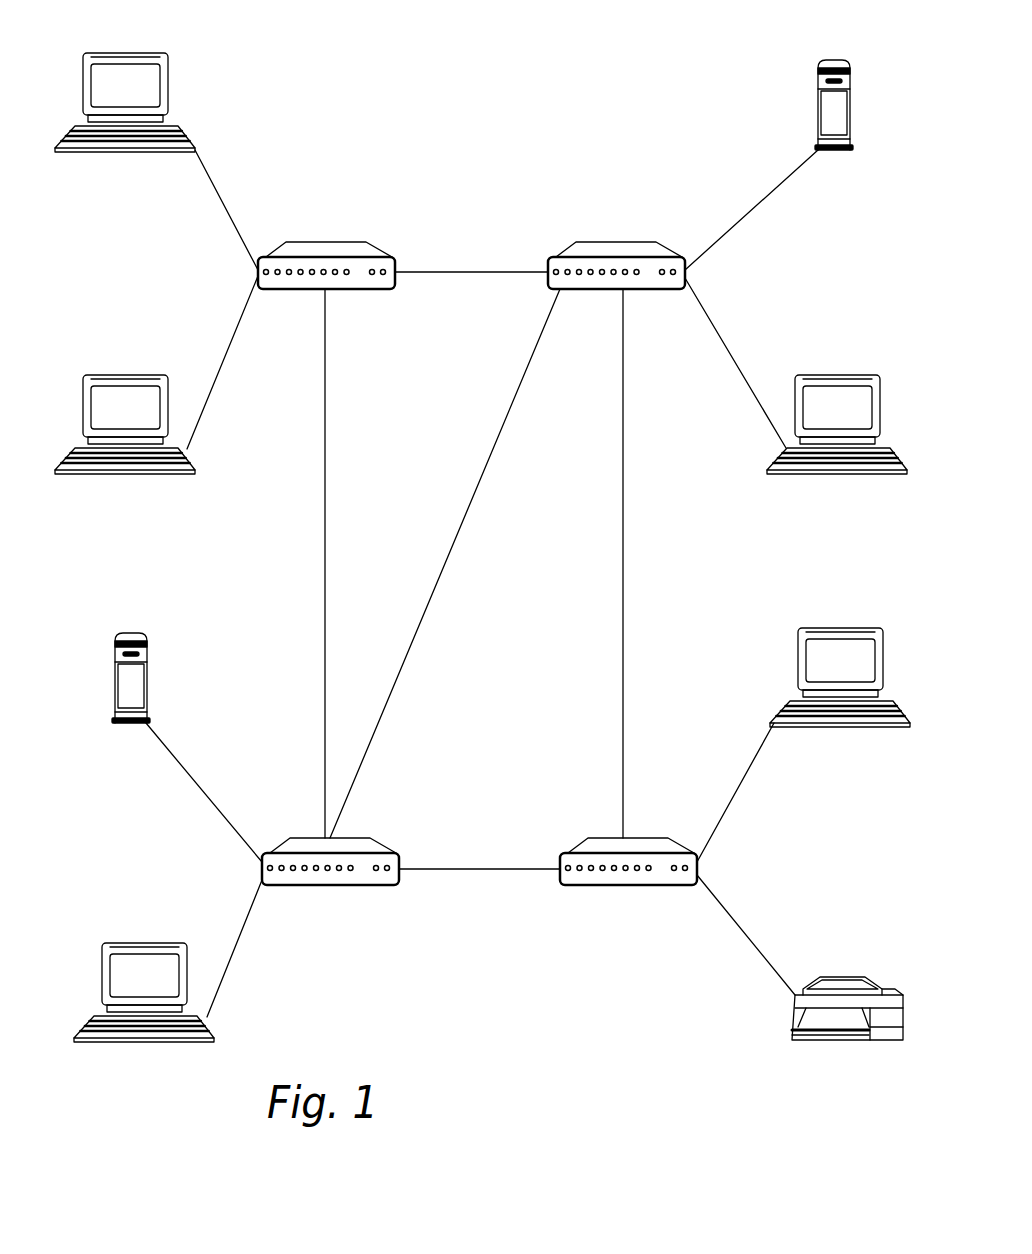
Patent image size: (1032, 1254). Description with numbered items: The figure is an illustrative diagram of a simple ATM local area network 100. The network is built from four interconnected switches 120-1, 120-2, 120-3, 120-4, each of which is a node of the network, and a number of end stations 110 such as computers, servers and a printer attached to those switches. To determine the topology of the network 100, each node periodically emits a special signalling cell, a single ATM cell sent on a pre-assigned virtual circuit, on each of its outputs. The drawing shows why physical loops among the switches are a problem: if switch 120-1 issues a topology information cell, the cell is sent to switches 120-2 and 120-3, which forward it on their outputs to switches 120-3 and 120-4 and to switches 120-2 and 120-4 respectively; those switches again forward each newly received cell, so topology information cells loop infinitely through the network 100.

The ATM network 100 is at (562, 1062).
The network node / end station (computer, server, printer) 110 is at (143, 52).
The switch 120-1 is at (355, 241).
The switch 120-2 is at (648, 241).
The switch 120-3 is at (345, 887).
The switch 120-4 is at (640, 887).